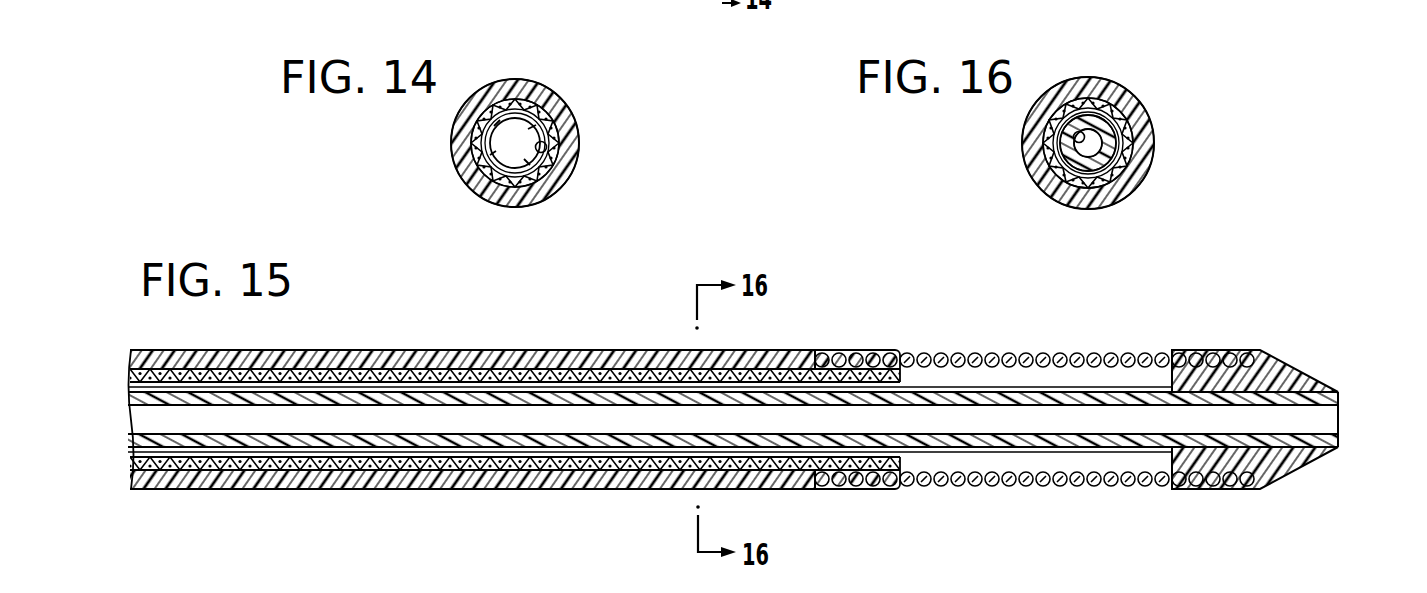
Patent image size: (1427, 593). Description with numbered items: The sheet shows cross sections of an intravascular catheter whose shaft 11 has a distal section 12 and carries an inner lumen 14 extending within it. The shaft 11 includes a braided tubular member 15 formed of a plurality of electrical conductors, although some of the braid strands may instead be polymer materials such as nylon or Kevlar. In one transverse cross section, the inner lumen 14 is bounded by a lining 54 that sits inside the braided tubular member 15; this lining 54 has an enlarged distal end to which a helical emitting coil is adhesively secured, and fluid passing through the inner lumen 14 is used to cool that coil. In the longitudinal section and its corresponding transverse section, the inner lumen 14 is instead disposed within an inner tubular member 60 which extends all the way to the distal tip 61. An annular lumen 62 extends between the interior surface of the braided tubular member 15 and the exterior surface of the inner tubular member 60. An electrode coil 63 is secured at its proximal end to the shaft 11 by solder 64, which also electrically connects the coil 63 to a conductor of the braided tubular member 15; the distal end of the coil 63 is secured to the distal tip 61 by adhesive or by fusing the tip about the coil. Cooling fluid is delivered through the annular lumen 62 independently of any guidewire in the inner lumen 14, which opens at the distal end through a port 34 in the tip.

In FIG. 15, the shaft 11 is at (402, 490).
In FIG. 14, the distal section 12 is at (515, 143).
In FIG. 15, the distal section 12 is at (672, 350).
In FIG. 14, the inner lumen 14 is at (543, 147).
In FIG. 16, the inner lumen 14 is at (1053, 157).
In FIG. 15, the inner lumen 14 is at (312, 412).
In FIG. 14, the braided tubular member 15 is at (478, 155).
In FIG. 16, the braided tubular member 15 is at (1130, 170).
In FIG. 15, the braided tubular member 15 is at (521, 378).
In FIG. 15, the port 34 is at (1340, 422).
In FIG. 14, the lining 54 is at (515, 108).
In FIG. 15, the inner tubular member 60 is at (1008, 442).
In FIG. 15, the distal tip 61 is at (1262, 372).
In FIG. 16, the annular lumen 62 is at (1125, 118).
In FIG. 15, the annular lumen 62 is at (578, 447).
In FIG. 15, the electrode coil 63 is at (1100, 355).
In FIG. 15, the solder 64 is at (880, 352).